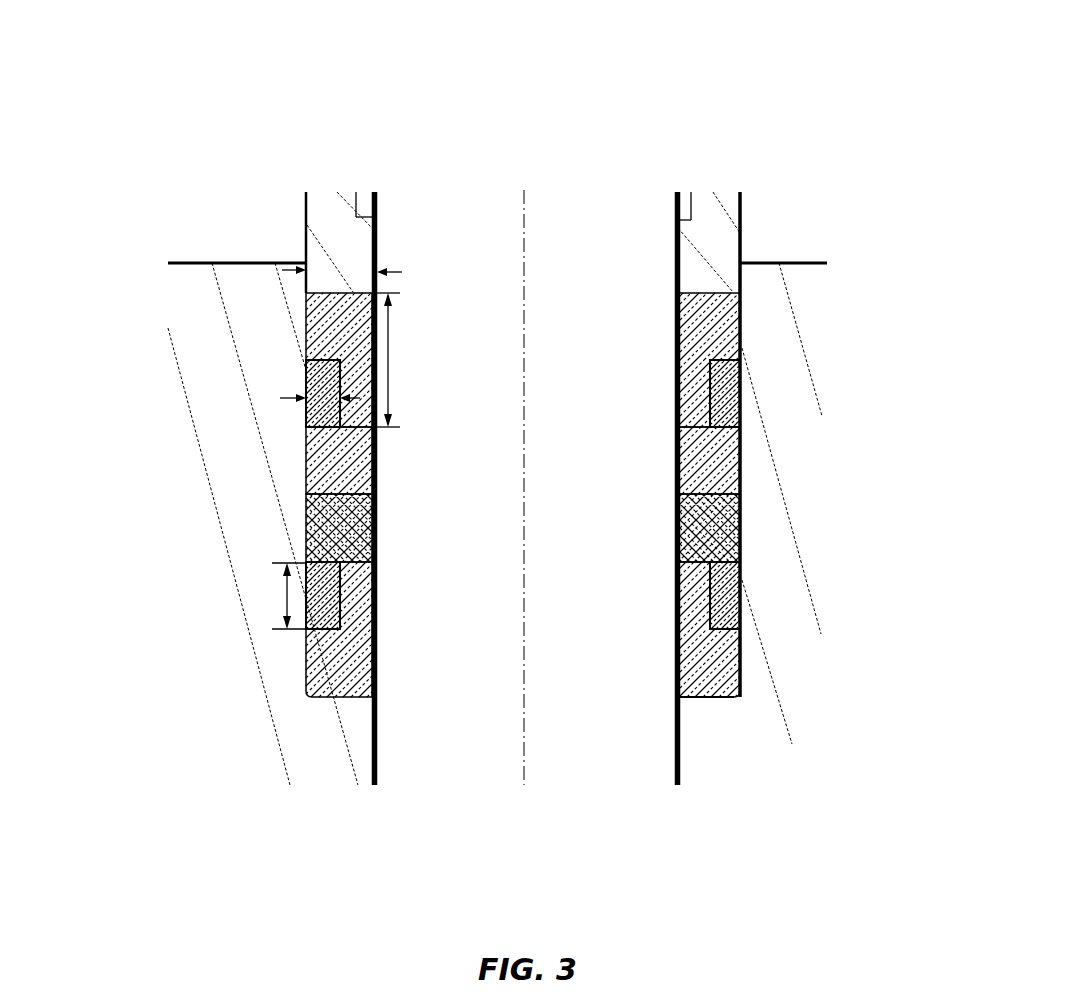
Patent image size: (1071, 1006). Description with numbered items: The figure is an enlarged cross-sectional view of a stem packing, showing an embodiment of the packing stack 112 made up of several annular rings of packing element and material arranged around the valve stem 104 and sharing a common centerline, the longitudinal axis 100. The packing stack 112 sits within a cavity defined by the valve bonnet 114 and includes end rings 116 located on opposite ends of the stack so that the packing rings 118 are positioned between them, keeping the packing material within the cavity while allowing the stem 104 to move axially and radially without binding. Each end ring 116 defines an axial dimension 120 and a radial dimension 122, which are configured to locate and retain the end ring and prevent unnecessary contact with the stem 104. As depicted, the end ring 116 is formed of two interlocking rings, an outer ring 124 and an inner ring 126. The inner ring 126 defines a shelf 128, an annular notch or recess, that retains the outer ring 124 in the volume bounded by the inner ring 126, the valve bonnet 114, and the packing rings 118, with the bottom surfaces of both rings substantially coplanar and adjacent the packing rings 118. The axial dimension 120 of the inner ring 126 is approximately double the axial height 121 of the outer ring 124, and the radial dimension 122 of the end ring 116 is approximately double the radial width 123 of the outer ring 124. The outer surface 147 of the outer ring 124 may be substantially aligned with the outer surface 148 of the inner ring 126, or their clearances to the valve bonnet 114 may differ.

The longitudinal axis 100 is at (523, 257).
The valve stem 104 is at (613, 243).
The packing stack 112 is at (844, 202).
The valve bonnet 114 is at (188, 352).
The end ring 116 is at (756, 352).
The packing ring 118 is at (722, 463).
The axial dimension 120 is at (387, 360).
The axial height 121 is at (285, 592).
The radial dimension 122 is at (404, 268).
The radial width 123 is at (280, 398).
The outer ring 124 is at (727, 600).
The inner ring 126 is at (710, 687).
The shelf 128 is at (736, 633).
The outer surface of the outer ring 147 is at (302, 408).
The outer surface of the inner ring 148 is at (304, 656).